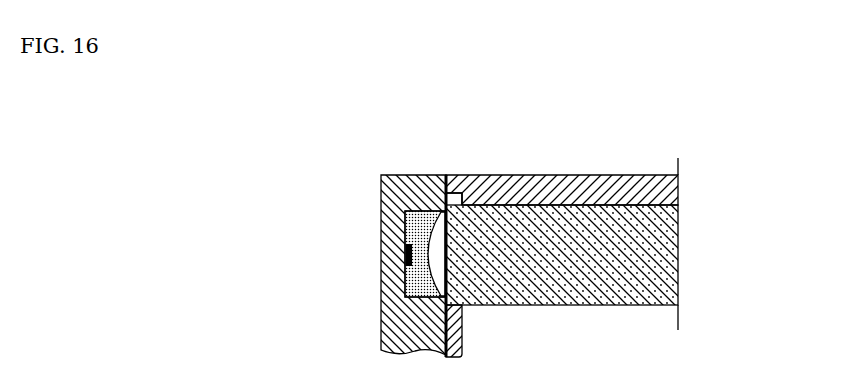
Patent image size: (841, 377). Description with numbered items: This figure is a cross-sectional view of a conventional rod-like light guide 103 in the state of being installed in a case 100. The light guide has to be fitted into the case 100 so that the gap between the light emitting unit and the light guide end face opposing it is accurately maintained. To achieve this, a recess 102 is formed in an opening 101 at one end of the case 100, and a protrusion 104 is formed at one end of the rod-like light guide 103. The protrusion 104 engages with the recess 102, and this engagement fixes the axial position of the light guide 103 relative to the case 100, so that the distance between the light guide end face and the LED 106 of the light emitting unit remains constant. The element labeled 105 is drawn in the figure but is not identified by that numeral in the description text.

The case 100 is at (613, 175).
The opening 101 is at (456, 293).
The recess 102 is at (446, 190).
The rod-like light guide 103 is at (629, 290).
The protrusion 104 is at (463, 196).
The holding member 105 is at (381, 188).
The LED 106 is at (405, 257).